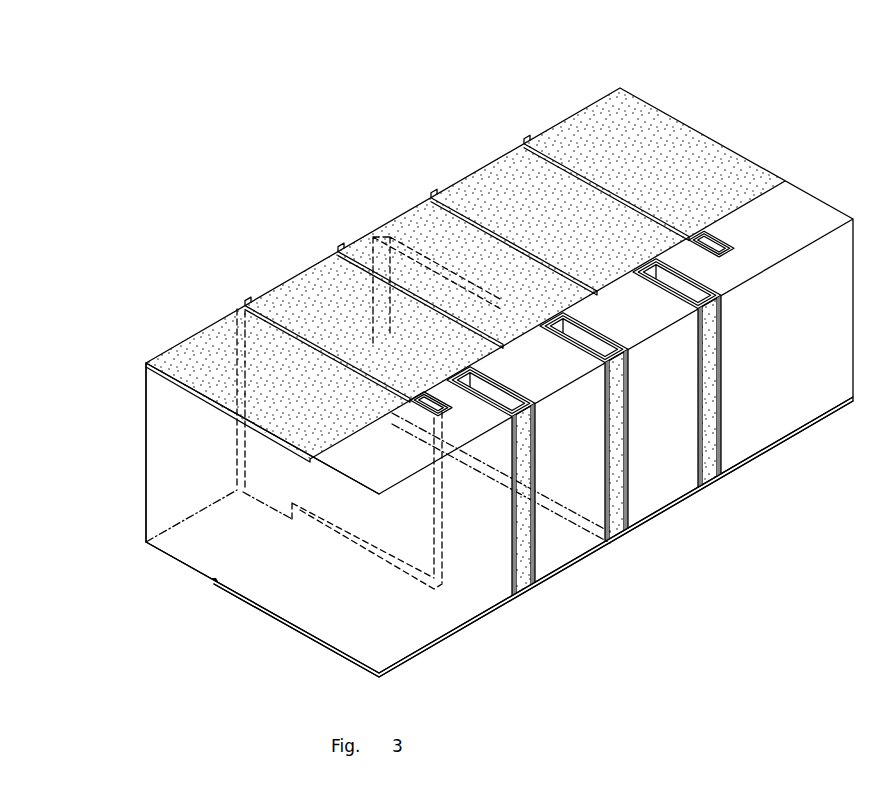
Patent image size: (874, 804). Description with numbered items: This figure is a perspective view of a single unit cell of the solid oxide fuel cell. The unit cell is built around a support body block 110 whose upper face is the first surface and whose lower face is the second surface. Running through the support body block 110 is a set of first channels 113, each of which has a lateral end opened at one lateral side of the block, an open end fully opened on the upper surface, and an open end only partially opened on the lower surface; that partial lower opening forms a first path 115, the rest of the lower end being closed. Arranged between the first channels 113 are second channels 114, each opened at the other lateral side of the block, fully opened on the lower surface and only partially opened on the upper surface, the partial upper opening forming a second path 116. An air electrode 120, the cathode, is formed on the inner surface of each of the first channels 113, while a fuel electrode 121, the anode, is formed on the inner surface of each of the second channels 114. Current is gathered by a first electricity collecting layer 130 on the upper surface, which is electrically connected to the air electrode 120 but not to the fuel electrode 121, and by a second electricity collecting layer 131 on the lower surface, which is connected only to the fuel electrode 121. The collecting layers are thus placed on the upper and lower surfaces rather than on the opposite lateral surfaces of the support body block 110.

The support body block 110 is at (724, 126).
The first channels 113 is at (470, 212).
The second channels 114 is at (712, 436).
The first path 115 is at (266, 503).
The second path 116 is at (490, 402).
The air electrode 120 is at (727, 253).
The fuel electrode 121 is at (700, 488).
The first electricity collecting layer 130 is at (592, 120).
The second electricity collecting layer 131 is at (704, 481).